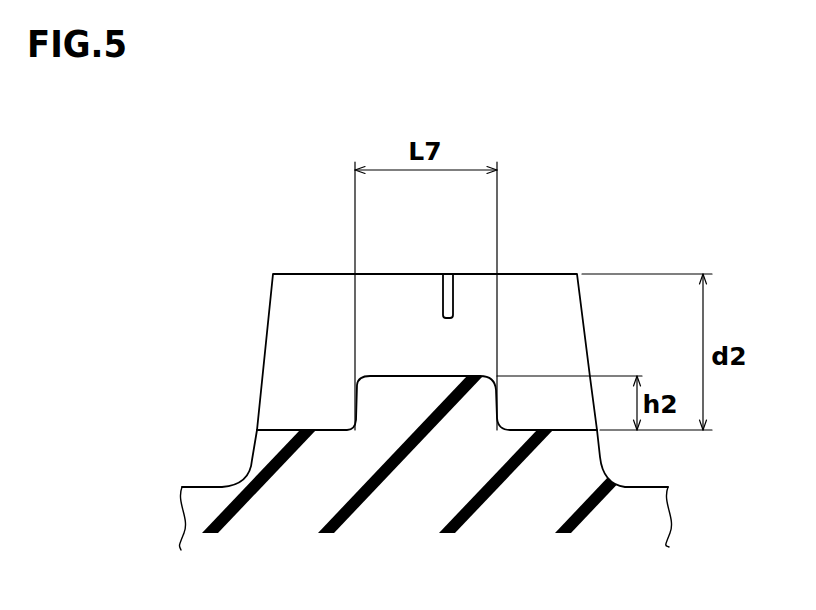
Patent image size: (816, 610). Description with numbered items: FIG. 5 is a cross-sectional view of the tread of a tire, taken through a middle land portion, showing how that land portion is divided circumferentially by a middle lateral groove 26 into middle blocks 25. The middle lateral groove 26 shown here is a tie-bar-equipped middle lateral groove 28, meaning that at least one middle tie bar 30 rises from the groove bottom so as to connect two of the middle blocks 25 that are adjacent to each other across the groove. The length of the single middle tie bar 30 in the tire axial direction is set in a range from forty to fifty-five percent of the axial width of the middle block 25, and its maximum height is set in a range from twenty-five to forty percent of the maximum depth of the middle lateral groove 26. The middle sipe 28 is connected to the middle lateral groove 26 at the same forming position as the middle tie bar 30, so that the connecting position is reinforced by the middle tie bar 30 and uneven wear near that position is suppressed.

The middle block 25 is at (572, 243).
The middle lateral groove 26 is at (313, 317).
The tie-bar-equipped middle lateral groove 28 is at (442, 297).
The middle tie bar 30 is at (413, 375).